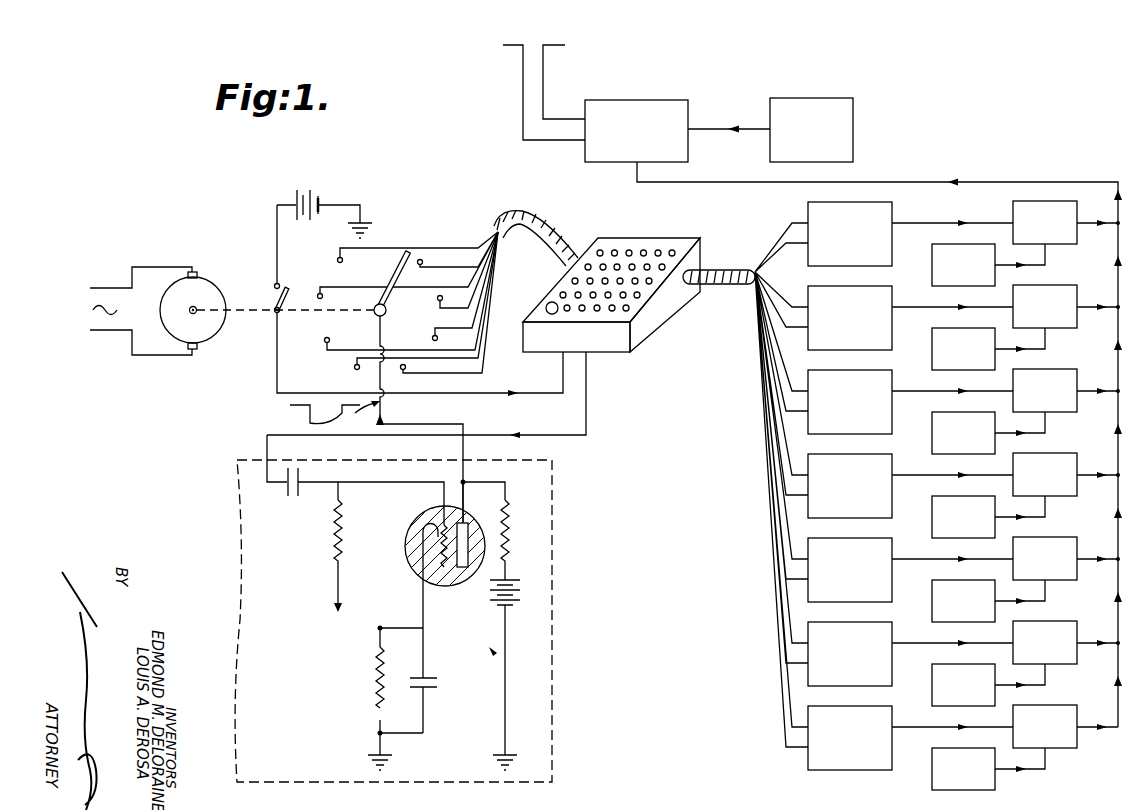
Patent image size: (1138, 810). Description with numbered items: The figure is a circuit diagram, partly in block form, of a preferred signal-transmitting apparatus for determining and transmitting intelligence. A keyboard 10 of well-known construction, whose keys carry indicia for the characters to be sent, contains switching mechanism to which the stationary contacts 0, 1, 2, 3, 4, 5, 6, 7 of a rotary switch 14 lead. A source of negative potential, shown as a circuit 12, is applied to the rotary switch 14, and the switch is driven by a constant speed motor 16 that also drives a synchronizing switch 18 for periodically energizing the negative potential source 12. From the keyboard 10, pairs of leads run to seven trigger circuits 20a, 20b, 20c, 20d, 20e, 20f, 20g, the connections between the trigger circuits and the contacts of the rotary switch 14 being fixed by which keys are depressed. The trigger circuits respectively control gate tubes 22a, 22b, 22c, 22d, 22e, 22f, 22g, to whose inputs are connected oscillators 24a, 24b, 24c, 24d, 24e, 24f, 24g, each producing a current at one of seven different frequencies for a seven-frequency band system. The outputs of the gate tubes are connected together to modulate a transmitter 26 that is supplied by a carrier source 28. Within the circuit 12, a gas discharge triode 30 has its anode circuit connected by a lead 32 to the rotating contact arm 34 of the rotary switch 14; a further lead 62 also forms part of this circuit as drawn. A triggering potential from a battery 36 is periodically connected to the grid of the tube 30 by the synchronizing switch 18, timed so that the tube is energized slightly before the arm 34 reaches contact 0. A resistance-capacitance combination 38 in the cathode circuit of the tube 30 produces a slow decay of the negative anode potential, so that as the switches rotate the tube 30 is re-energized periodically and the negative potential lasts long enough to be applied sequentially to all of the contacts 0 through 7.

The keyboard 10 is at (609, 343).
The negative potential source circuit 12 is at (545, 637).
The rotary switch 14 is at (402, 324).
The constant speed motor 16 is at (212, 327).
The synchronizing switch 18 is at (268, 305).
The trigger circuit 20a is at (861, 192).
The trigger circuit 20b is at (861, 276).
The trigger circuit 20c is at (861, 360).
The trigger circuit 20d is at (861, 444).
The trigger circuit 20e is at (861, 528).
The trigger circuit 20f is at (861, 612).
The trigger circuit 20g is at (861, 696).
The gate tube 22a is at (1075, 203).
The gate tube 22b is at (1075, 287).
The gate tube 22c is at (1075, 371).
The gate tube 22d is at (1075, 455).
The gate tube 22e is at (1075, 539).
The gate tube 22f is at (1075, 623).
The gate tube 22g is at (1075, 707).
The oscillator 24a is at (930, 243).
The oscillator 24b is at (930, 327).
The oscillator 24c is at (930, 411).
The oscillator 24d is at (930, 495).
The oscillator 24e is at (930, 579).
The oscillator 24f is at (930, 663).
The oscillator 24g is at (930, 747).
The transmitter 26 is at (656, 97).
The carrier source 28 is at (833, 100).
The triode 30 is at (429, 506).
The lead 32 is at (434, 415).
The rotating contact arm 34 is at (392, 272).
The battery 36 is at (319, 192).
The resistance-capacitance combination 38 is at (405, 684).
The lead 62 is at (471, 431).
The stationary contact 0 is at (458, 249).
The stationary contact 1 is at (468, 270).
The stationary contact 2 is at (466, 290).
The stationary contact 3 is at (448, 309).
The stationary contact 4 is at (424, 308).
The stationary contact 5 is at (406, 291).
The stationary contact 6 is at (402, 268).
The stationary contact 7 is at (413, 250).